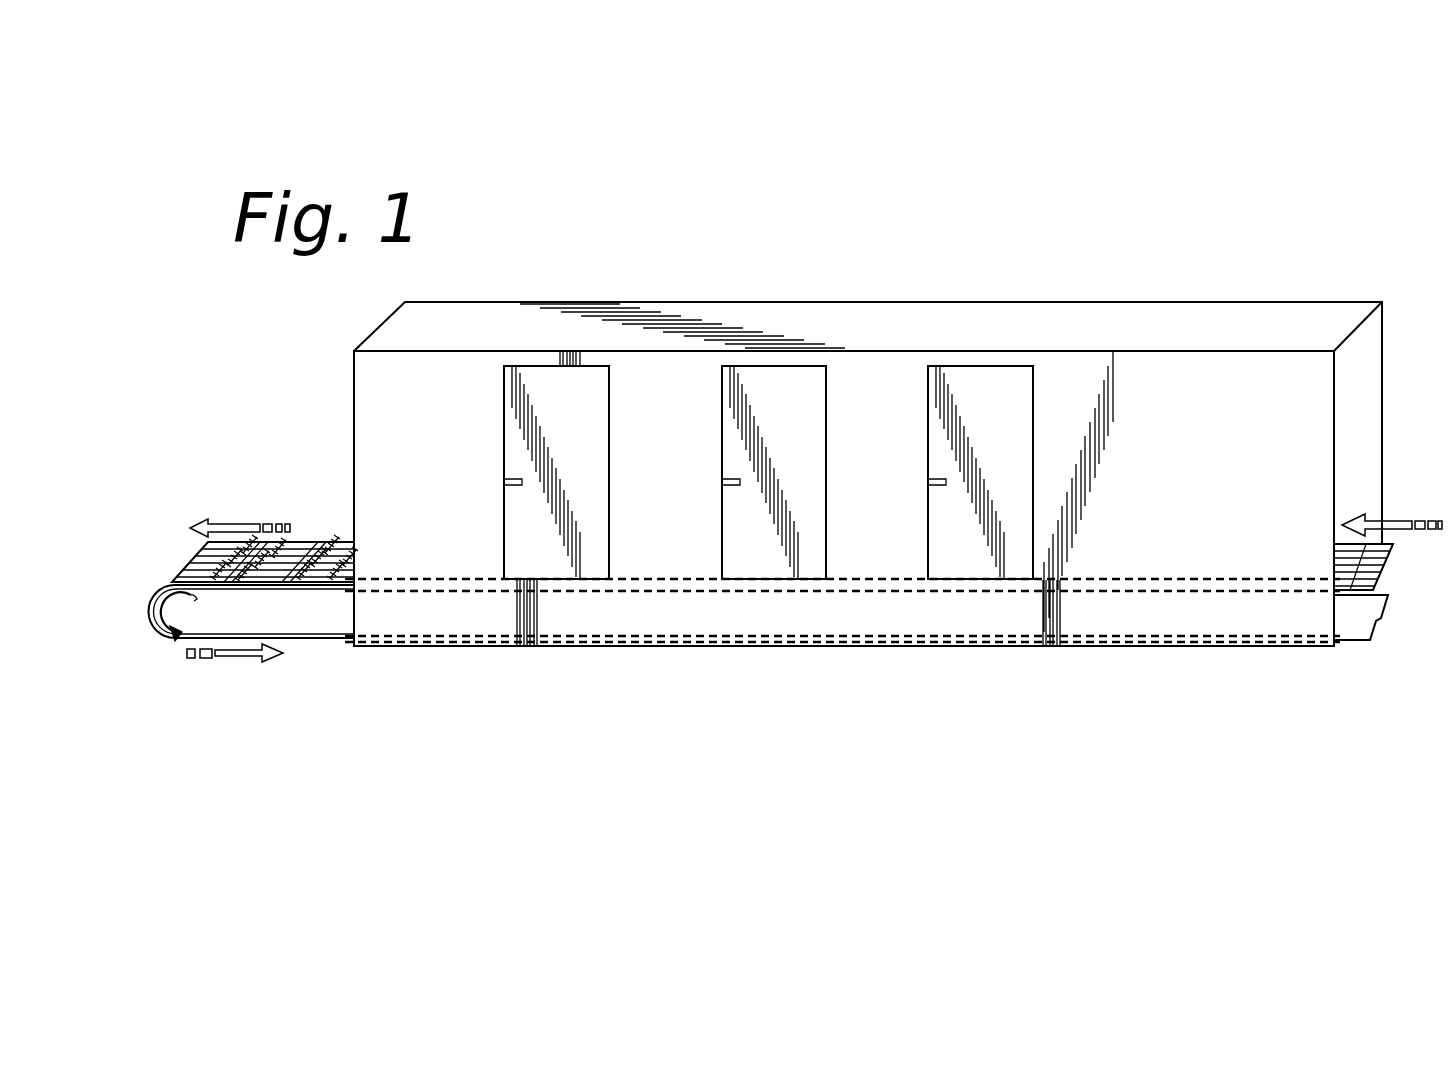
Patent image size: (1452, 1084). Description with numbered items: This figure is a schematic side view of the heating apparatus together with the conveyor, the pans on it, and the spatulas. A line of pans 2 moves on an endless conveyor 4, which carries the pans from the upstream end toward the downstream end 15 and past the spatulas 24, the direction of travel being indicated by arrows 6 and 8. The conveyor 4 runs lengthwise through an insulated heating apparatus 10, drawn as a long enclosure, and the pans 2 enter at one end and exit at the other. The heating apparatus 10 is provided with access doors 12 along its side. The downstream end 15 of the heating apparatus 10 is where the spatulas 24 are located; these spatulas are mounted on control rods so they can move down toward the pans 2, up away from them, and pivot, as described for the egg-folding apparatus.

The pans 2 is at (303, 542).
The endless conveyor 4 is at (148, 610).
The arrow 6 is at (1403, 518).
The arrow 8 is at (240, 526).
The insulated heating apparatus 10 is at (868, 318).
The access doors 12 is at (949, 557).
The downstream end 15 is at (269, 379).
The spatulas 24 is at (305, 586).